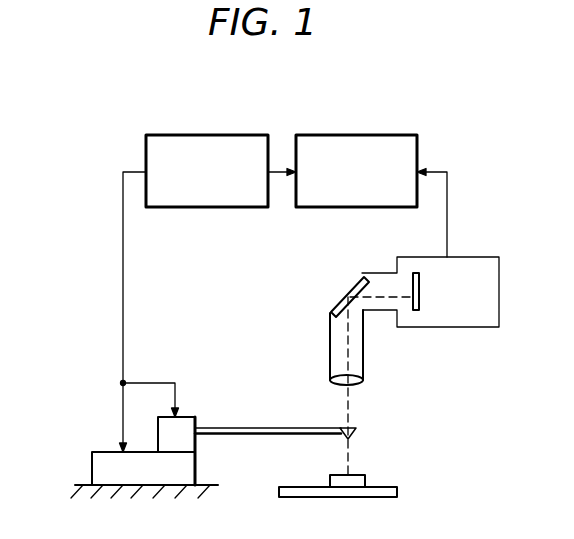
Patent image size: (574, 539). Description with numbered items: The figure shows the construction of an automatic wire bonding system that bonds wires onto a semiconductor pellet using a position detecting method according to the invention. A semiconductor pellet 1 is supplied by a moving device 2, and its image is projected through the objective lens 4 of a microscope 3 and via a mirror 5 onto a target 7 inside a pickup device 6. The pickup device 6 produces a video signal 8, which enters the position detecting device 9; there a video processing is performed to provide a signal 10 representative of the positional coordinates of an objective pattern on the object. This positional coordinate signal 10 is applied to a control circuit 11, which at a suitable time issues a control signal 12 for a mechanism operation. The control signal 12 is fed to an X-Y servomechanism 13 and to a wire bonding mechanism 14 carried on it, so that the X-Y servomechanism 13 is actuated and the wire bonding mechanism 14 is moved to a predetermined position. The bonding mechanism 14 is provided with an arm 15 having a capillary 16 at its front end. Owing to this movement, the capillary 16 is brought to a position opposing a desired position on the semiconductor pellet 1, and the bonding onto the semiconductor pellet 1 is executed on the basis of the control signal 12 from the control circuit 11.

The semiconductor pellet 1 is at (363, 475).
The moving device 2 is at (397, 491).
The microscope 3 is at (363, 345).
The objective lens 4 is at (358, 385).
The mirror 5 is at (360, 270).
The pickup device 6 is at (475, 268).
The target 7 is at (419, 297).
The video signal 8 is at (447, 192).
The position detecting device 9 is at (352, 135).
The positional coordinate signal 10 is at (273, 174).
The control circuit 11 is at (218, 135).
The control signal 12 is at (123, 275).
The X-Y servomechanism 13 is at (112, 462).
The wire bonding mechanism 14 is at (185, 428).
The arm 15 is at (255, 427).
The capillary 16 is at (356, 432).